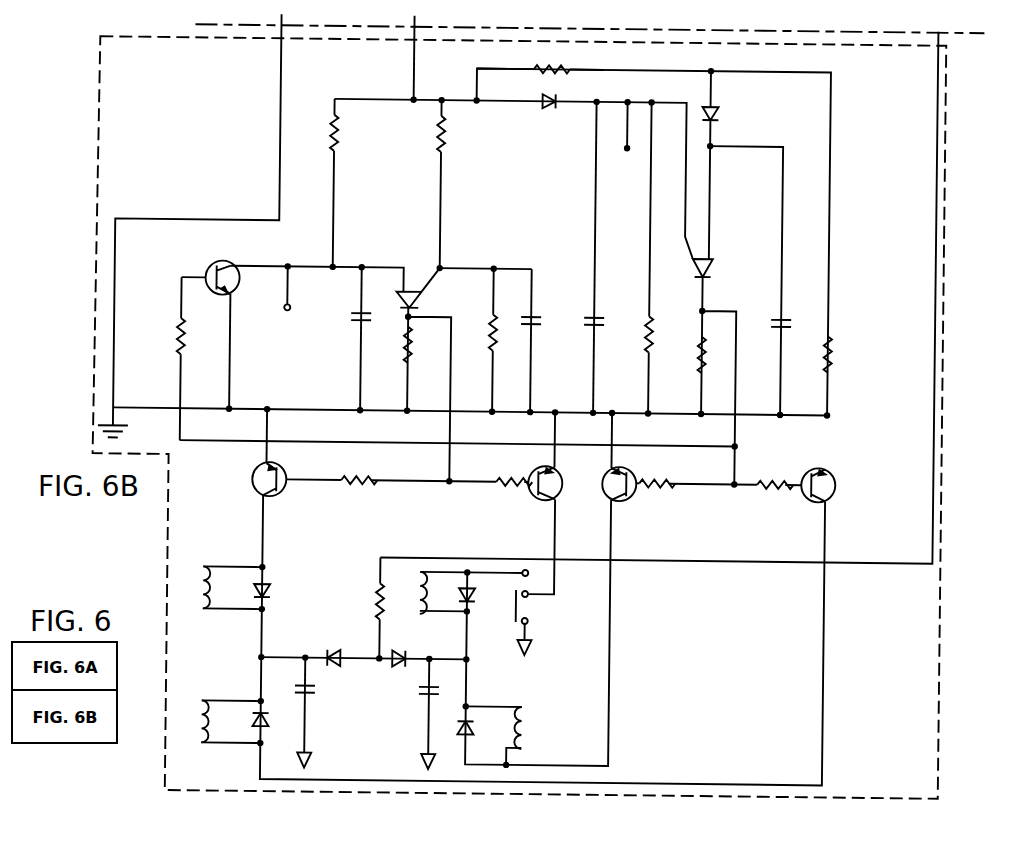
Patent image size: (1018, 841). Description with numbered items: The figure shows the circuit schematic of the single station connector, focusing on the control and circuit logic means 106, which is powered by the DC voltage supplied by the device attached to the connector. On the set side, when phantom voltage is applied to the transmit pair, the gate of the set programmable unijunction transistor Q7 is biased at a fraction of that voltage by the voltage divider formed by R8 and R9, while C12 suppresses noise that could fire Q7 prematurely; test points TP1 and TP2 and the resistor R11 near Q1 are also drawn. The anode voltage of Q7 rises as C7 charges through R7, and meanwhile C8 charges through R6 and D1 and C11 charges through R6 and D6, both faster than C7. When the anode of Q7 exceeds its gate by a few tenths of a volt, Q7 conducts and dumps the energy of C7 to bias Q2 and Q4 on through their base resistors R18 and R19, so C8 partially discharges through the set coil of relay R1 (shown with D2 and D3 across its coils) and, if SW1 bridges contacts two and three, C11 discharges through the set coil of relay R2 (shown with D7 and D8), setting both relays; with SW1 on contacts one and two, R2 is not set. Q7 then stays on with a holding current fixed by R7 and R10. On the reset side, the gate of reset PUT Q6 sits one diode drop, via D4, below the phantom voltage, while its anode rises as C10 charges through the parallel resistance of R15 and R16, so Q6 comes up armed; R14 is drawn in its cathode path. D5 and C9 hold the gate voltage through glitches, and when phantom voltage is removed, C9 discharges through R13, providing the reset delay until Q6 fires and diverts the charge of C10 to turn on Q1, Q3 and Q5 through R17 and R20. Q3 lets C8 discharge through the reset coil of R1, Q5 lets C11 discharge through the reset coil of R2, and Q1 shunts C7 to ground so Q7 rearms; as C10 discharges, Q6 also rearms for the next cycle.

The control and circuit logic means 106 is at (944, 146).
The resistor R7 is at (348, 183).
The resistor R8 is at (455, 184).
The resistor R15 is at (540, 57).
The diode D5 is at (534, 92).
The test point TP1 is at (629, 139).
The diode D4 is at (725, 109).
The reset programmable unijunction transistor Q6 is at (704, 220).
The resistor R13 is at (666, 257).
The resistor R14 is at (678, 354).
The capacitor C9 is at (603, 257).
The capacitor C10 is at (766, 315).
The resistor R16 is at (849, 347).
The capacitor C12 is at (546, 341).
The resistor R9 is at (478, 339).
The set programmable unijunction transistor Q7 is at (414, 293).
The resistor R10 is at (384, 344).
The capacitor C7 is at (353, 338).
The test point TP2 is at (292, 299).
The resistor R11 is at (196, 358).
The transistor Q1 is at (215, 269).
The transistor Q2 is at (260, 469).
The resistor R18 is at (370, 470).
The resistor R19 is at (503, 472).
The transistor Q4 is at (535, 492).
The transistor Q5 is at (628, 493).
The resistor R20 is at (664, 474).
The resistor R17 is at (774, 477).
The transistor Q3 is at (826, 479).
The relay R1 is at (214, 654).
The diode D2 is at (276, 595).
The diode D3 is at (274, 727).
The diode D1 is at (328, 647).
The capacitor C8 is at (316, 712).
The resistor R6 is at (362, 607).
The diode D6 is at (405, 648).
The capacitor C11 is at (413, 714).
The relay R2 is at (464, 667).
The diode D7 is at (479, 596).
The diode D8 is at (476, 734).
The switch SW1 is at (520, 607).